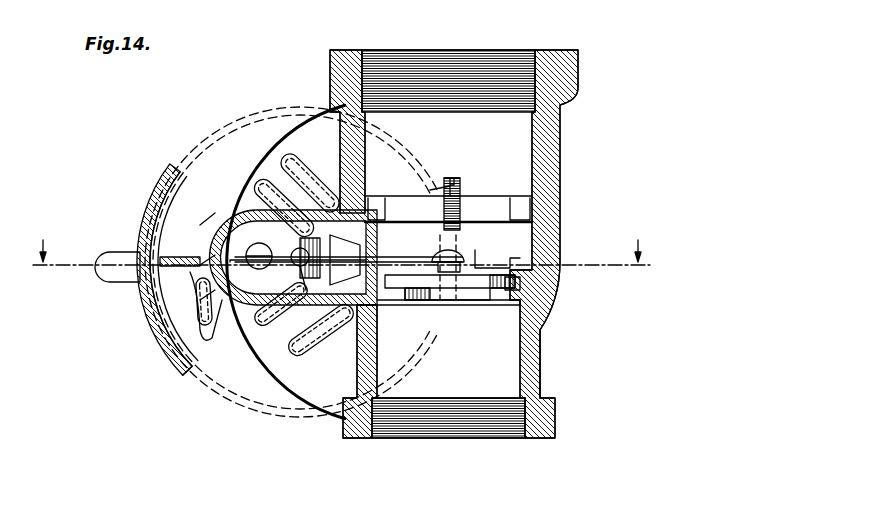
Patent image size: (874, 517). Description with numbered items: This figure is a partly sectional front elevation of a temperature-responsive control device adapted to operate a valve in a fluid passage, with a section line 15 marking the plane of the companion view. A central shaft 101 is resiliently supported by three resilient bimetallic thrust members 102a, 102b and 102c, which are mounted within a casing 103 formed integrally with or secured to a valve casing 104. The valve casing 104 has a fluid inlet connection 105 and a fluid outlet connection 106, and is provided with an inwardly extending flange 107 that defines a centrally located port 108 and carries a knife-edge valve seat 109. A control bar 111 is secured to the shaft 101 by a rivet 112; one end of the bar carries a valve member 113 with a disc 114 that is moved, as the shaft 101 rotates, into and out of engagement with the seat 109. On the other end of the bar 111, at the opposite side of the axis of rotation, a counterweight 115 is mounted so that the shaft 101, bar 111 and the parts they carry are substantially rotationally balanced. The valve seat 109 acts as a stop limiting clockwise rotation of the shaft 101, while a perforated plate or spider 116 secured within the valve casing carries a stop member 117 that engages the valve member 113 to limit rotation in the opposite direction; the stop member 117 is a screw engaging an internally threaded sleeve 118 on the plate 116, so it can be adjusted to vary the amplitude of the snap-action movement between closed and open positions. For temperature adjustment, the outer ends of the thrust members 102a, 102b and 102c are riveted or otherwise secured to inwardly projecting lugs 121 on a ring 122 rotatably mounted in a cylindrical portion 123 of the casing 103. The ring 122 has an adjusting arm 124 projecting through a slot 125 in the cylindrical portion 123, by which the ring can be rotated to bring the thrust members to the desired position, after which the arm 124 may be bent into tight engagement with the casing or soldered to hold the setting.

The section line 15 is at (340, 247).
The central shaft 101 is at (280, 218).
The resilient bimetallic thrust member 102a is at (288, 160).
The resilient bimetallic thrust member 102b is at (328, 338).
The resilient bimetallic thrust member 102c is at (190, 305).
The casing 103 is at (188, 140).
The valve casing 104 is at (560, 218).
The fluid inlet connection 105 is at (533, 58).
The fluid outlet connection 106 is at (512, 436).
The inwardly extending flange 107 is at (500, 326).
The port 108 is at (460, 300).
The knife-edge valve seat 109 is at (545, 310).
The control bar 111 is at (415, 262).
The rivet 112 is at (272, 300).
The valve member 113 is at (470, 265).
The disc 114 is at (520, 283).
The counterweight 115 is at (240, 298).
The perforated plate or spider 116 is at (520, 200).
The stop member 117 is at (458, 180).
The internally threaded sleeve 118 is at (417, 184).
The inwardly projecting lug 121 is at (160, 245).
The ring 122 is at (150, 200).
The cylindrical portion 123 is at (178, 360).
The adjusting arm 124 is at (110, 277).
The slot 125 is at (175, 330).